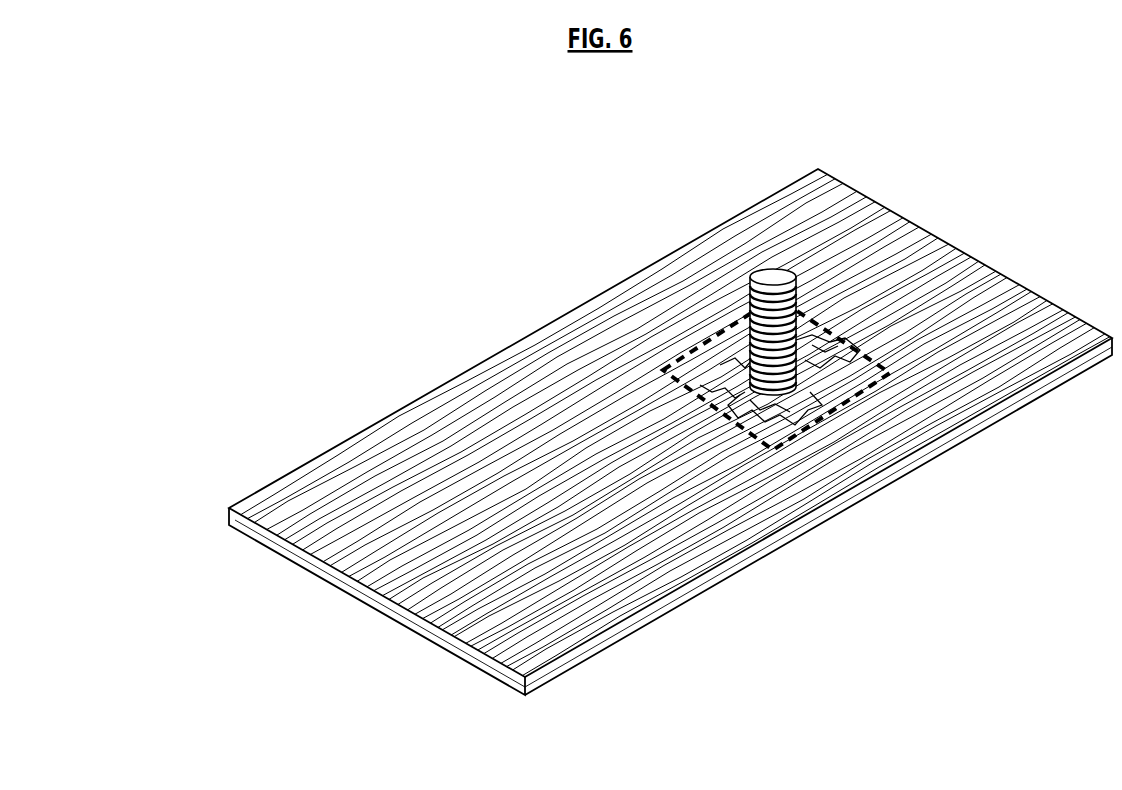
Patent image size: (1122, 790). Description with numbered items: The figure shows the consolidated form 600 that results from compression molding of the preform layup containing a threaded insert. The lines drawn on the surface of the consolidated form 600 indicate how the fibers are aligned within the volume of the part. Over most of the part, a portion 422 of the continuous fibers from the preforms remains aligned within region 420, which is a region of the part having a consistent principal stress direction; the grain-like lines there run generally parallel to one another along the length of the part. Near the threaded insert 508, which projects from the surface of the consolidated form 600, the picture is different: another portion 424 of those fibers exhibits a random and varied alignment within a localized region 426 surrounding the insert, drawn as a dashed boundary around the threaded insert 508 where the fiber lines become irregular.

The consolidated form 600 is at (358, 261).
The region 420 is at (651, 423).
The portion of the continuous fibers 422 is at (350, 487).
The portion of the fibers 424 is at (723, 367).
The localized region 426 is at (833, 413).
The threaded insert 508 is at (773, 277).